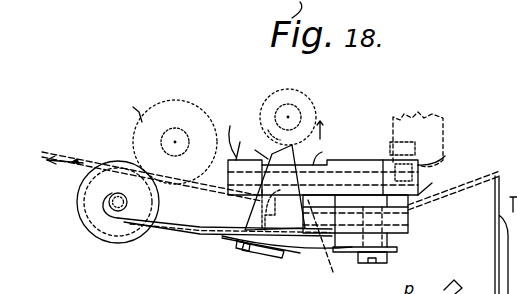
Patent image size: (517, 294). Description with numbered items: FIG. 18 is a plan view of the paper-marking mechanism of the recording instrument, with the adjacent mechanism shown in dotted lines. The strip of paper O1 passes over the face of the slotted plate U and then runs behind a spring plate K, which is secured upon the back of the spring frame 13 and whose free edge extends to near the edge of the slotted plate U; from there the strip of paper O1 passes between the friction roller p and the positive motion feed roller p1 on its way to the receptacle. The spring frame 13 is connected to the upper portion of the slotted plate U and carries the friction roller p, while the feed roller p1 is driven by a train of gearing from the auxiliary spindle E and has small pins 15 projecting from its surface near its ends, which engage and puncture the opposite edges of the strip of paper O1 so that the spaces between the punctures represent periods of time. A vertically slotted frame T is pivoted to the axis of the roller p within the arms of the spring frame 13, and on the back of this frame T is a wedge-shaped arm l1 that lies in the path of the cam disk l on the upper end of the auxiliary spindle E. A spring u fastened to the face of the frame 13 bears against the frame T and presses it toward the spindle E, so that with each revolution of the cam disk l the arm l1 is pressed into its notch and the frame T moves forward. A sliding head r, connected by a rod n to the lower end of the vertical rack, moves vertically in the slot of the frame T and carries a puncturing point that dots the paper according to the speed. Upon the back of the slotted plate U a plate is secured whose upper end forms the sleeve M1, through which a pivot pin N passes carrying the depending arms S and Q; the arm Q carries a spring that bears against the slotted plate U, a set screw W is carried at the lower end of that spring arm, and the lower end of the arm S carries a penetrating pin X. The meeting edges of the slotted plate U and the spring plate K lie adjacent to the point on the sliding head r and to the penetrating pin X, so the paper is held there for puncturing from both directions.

The strip of paper O1 is at (265, 169).
The friction roller p is at (86, 222).
The vertically slotted frame T is at (204, 226).
The spring u is at (318, 262).
The spring frame 13 is at (193, 238).
The positive motion feed roller p1 is at (185, 102).
The pins 15 is at (129, 109).
The auxiliary spindle E is at (290, 100).
The cam disk l is at (315, 111).
The depending arm S is at (230, 130).
The wedge-shaped arm l1 is at (252, 142).
The sleeve M1 is at (357, 160).
The pivot pin N is at (324, 149).
The spring plate K is at (355, 243).
The penetrating pin X is at (275, 187).
The sliding head r is at (259, 254).
The rod n is at (232, 246).
The bracket f is at (435, 113).
The set screw W is at (415, 147).
The depending arm Q is at (439, 155).
The slotted plate U is at (429, 182).